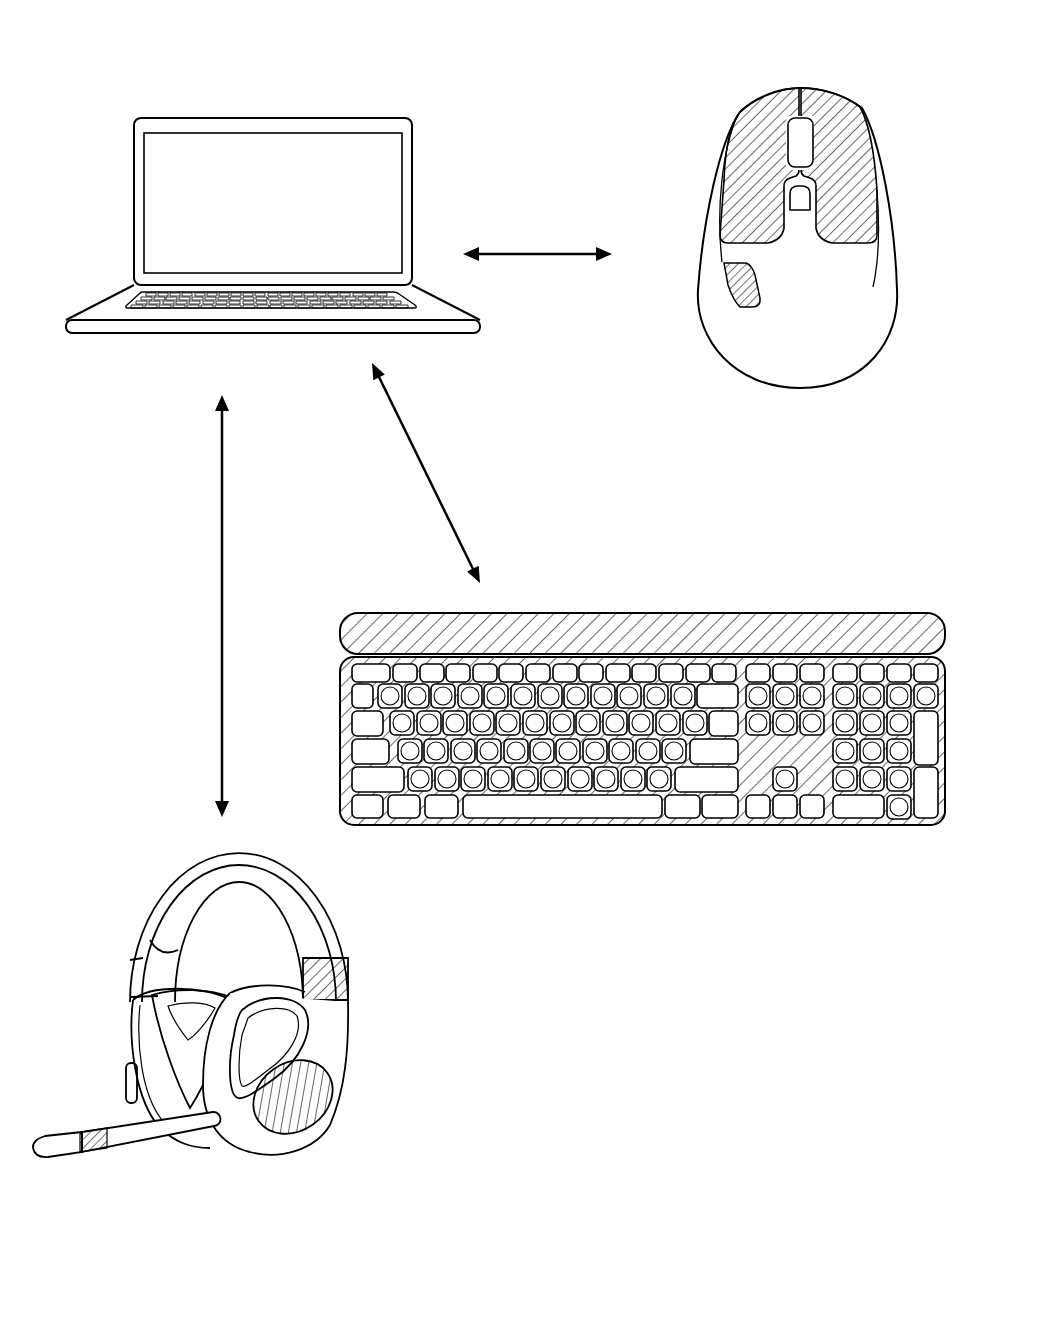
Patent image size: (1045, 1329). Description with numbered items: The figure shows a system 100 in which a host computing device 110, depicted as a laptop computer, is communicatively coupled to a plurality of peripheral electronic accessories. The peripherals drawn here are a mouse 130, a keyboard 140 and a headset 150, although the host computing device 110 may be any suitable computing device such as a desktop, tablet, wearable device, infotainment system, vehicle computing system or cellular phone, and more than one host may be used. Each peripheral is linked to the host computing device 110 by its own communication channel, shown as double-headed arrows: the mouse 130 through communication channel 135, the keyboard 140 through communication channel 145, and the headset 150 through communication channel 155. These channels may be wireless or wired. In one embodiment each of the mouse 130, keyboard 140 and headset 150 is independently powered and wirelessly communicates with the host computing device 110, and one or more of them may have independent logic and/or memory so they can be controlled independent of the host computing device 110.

The system 100 is at (154, 59).
The host computing device 110 is at (352, 118).
The mouse 130 is at (825, 92).
The communication channel 135 is at (522, 254).
The keyboard 140 is at (685, 612).
The communication channel 145 is at (420, 458).
The headset 150 is at (328, 1115).
The communication channel 155 is at (222, 470).